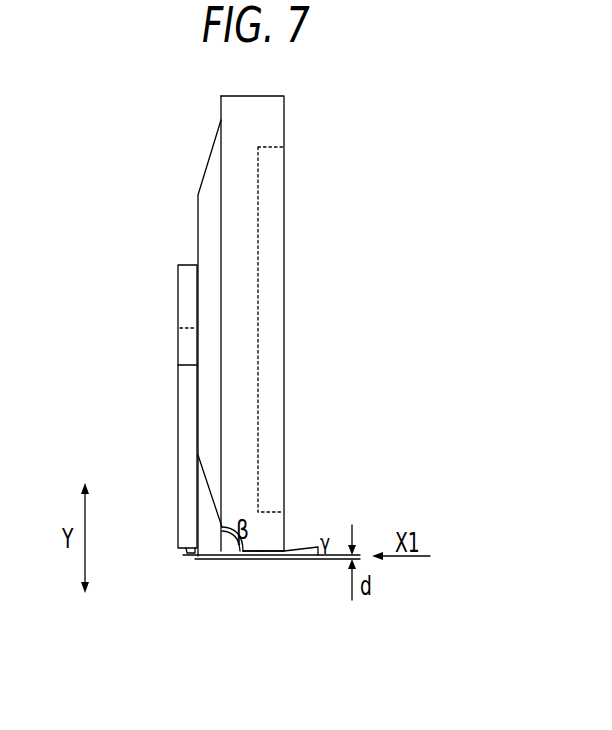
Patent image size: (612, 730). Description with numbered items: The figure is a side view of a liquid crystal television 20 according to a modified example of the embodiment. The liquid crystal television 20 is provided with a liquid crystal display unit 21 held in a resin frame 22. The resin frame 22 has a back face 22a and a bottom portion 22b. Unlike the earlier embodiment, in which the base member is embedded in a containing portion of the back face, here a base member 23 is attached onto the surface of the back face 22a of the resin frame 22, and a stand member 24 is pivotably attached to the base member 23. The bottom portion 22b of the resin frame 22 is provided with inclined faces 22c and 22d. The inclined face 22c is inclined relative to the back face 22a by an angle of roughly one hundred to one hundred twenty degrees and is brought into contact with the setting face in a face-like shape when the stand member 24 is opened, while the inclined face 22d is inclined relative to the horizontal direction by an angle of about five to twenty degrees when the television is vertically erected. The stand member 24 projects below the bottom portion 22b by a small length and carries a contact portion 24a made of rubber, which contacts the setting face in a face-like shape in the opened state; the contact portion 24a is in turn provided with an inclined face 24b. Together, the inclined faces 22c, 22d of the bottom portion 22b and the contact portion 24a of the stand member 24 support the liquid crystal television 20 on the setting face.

The liquid crystal television 20 is at (141, 180).
The liquid crystal display unit 21 is at (258, 147).
The resin frame 22 is at (244, 341).
The back face 22a is at (207, 158).
The bottom portion 22b is at (305, 632).
The inclined face 22c is at (241, 557).
The inclined face 22d is at (267, 557).
The base member 23 is at (183, 300).
The stand member 24 is at (183, 407).
The contact portion 24a is at (185, 551).
The inclined face 24b is at (192, 557).